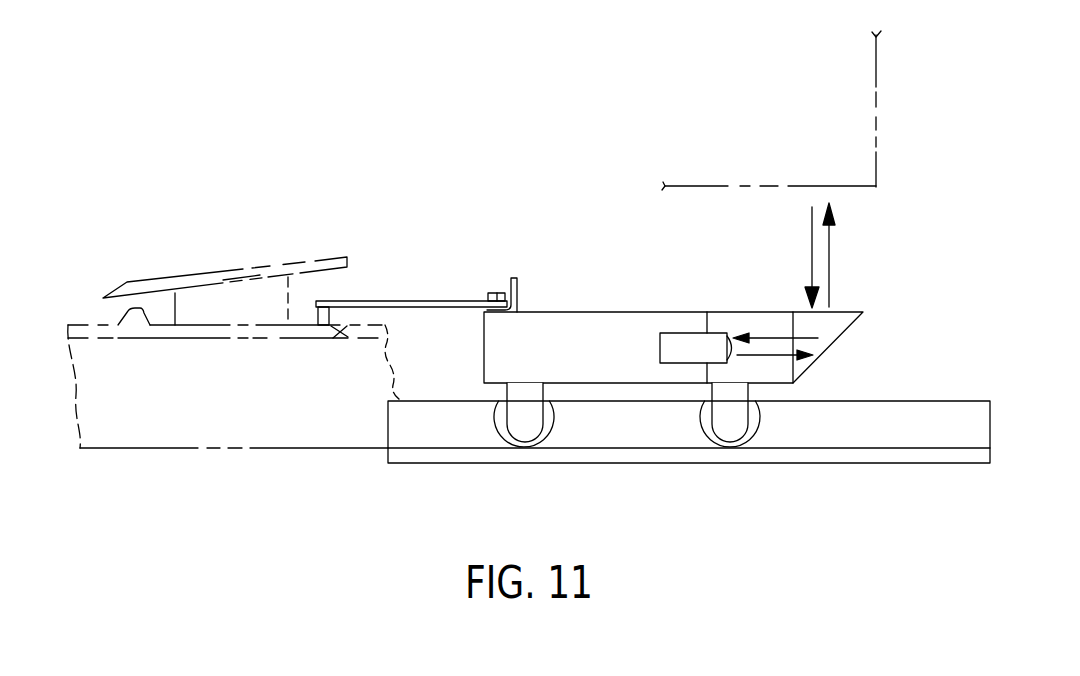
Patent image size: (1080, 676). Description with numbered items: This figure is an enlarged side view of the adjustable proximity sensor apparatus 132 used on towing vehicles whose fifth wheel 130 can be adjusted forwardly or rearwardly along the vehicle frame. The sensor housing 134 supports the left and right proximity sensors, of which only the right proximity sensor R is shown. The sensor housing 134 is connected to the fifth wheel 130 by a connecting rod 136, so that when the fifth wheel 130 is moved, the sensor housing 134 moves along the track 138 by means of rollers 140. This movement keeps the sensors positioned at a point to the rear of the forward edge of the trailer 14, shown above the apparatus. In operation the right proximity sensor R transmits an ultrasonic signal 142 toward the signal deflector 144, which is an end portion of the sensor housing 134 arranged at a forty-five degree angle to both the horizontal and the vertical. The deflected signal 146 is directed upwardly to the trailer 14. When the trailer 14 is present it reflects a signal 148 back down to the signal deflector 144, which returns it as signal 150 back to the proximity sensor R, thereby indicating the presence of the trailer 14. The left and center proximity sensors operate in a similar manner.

The trailer 14 is at (877, 160).
The fifth wheel 130 is at (337, 257).
The adjustable proximity sensor apparatus 132 is at (706, 346).
The sensor housing 134 is at (484, 343).
The connecting rod 136 is at (438, 302).
The track 138 is at (990, 457).
The rollers 140 is at (497, 439).
The ultrasonic signal 142 is at (773, 356).
The signal deflector 144 is at (840, 340).
The deflected signal 146 is at (830, 247).
The reflected signal 148 is at (812, 217).
The return signal 150 is at (772, 338).
The right proximity sensor R is at (673, 333).